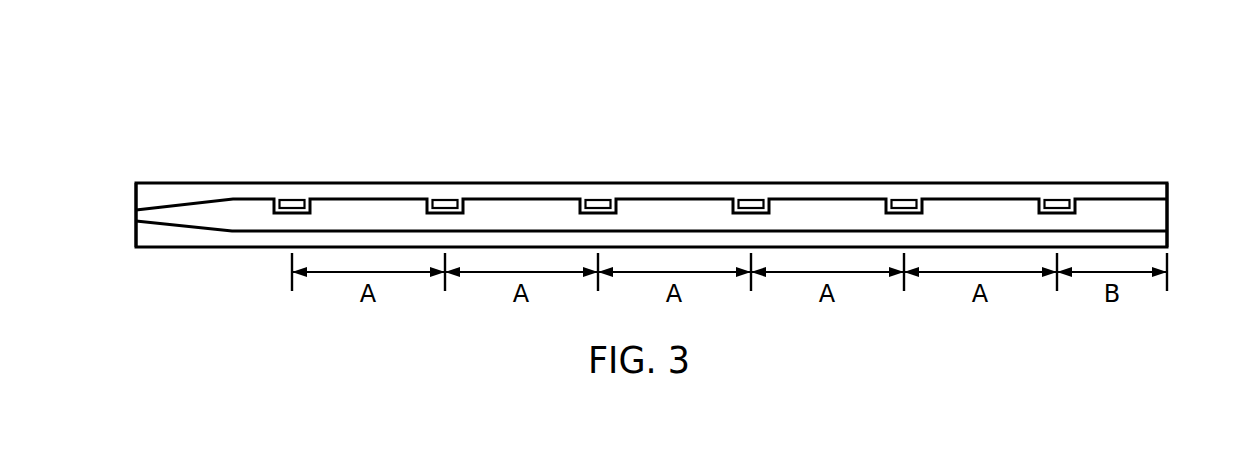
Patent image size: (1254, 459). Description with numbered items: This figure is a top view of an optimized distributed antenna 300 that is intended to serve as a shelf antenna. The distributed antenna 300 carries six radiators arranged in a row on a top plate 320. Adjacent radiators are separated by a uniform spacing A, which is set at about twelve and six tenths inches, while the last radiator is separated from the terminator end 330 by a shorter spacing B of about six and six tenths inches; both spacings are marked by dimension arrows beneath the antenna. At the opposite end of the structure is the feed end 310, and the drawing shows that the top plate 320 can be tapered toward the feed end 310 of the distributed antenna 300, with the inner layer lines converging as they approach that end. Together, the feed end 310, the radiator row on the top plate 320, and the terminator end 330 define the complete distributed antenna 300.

The distributed antenna 300 is at (268, 76).
The feed end 310 is at (136, 216).
The top plate 320 is at (220, 218).
The terminator end 330 is at (1167, 207).